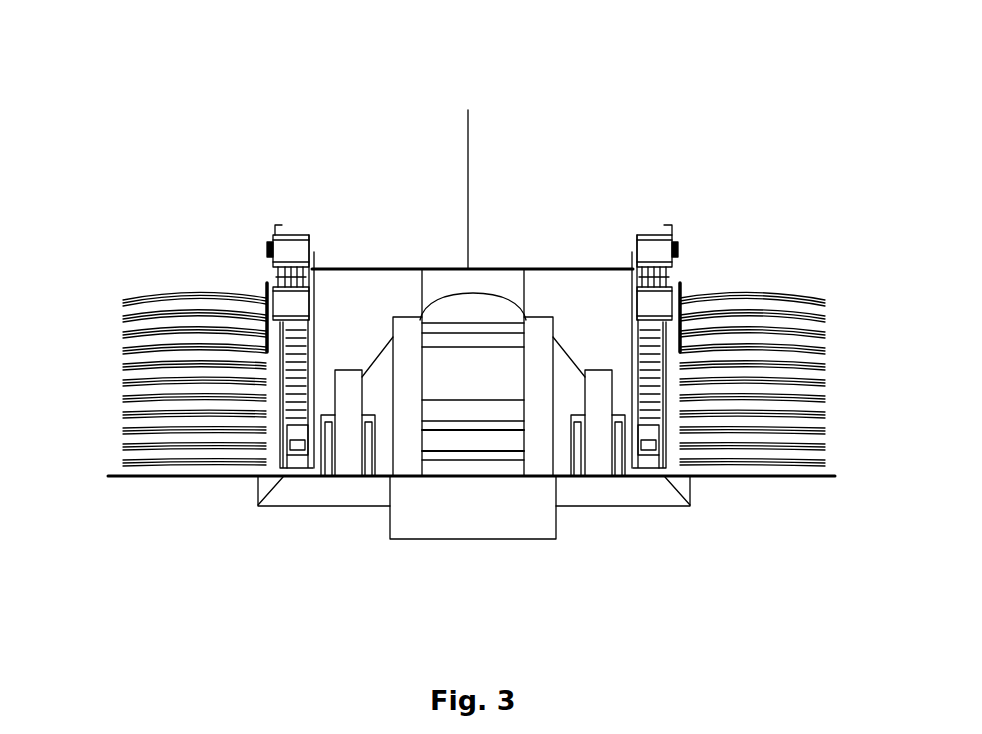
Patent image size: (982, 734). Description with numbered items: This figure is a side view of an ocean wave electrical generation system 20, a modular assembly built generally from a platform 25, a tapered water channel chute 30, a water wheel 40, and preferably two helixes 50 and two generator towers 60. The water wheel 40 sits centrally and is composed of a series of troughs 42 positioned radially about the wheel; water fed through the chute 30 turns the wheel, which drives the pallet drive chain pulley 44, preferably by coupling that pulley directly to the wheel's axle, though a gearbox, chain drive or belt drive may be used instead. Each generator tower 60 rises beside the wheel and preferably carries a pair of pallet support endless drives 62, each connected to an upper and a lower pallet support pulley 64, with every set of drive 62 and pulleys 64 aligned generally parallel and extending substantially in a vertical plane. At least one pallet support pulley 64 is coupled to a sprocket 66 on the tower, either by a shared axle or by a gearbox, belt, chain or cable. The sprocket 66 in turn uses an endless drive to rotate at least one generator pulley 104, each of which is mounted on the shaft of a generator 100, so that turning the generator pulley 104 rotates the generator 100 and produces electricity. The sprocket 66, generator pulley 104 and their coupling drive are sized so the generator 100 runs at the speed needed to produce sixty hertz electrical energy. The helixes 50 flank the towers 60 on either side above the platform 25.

The ocean wave electrical generation system 20 is at (350, 98).
The platform 25 is at (232, 477).
The tapered water channel chute 30 is at (472, 178).
The water wheel 40 is at (553, 452).
The troughs 42 is at (442, 328).
The pallet drive chain pulley 44 is at (346, 370).
The helixes 50 is at (122, 303).
The generator towers 60 is at (275, 225).
The pallet support endless drives 62 is at (316, 330).
The pallet support pulleys 64 is at (312, 423).
The sprocket 66 is at (263, 292).
The generator 100 is at (315, 283).
The generator pulley 104 is at (267, 245).